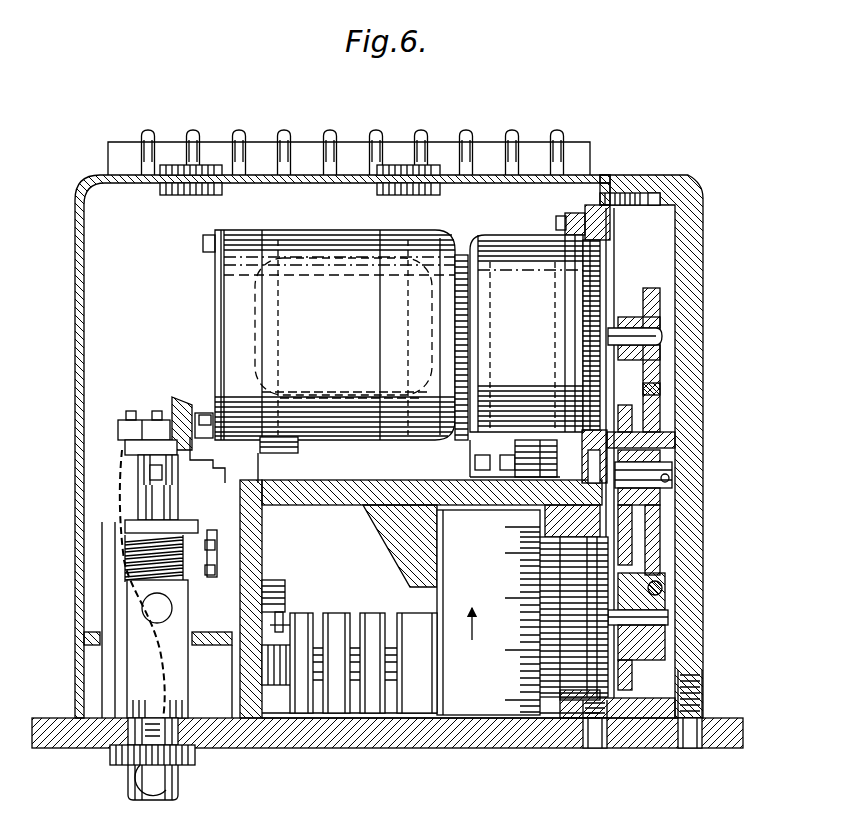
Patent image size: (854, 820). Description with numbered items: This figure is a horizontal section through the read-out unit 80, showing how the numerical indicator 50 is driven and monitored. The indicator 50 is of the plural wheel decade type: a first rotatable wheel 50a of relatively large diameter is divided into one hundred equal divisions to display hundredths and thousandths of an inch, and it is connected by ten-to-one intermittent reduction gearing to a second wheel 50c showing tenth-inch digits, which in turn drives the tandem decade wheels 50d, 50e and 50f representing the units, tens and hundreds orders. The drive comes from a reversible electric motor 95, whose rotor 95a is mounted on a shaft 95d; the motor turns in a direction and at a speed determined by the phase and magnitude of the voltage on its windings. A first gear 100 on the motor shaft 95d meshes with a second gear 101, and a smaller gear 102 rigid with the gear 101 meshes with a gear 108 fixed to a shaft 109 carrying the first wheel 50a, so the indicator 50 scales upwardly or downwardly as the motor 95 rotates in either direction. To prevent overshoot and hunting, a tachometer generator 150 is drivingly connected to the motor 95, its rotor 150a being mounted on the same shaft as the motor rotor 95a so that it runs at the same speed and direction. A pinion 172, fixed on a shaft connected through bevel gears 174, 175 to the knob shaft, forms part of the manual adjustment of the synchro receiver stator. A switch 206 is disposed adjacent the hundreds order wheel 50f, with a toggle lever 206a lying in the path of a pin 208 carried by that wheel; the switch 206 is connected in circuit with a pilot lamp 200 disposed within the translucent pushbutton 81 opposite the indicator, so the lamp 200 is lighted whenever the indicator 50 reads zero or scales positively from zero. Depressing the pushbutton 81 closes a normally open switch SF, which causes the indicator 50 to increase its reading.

The read-out unit 80 is at (705, 608).
The reversible electric motor 95 is at (300, 228).
The rotor 95a is at (322, 272).
The motor shaft 95d is at (664, 342).
The tachometer generator 150 is at (493, 230).
The tachometer rotor 150a is at (528, 262).
The first gear 100 is at (648, 290).
The second gear 101 is at (657, 400).
The smaller gear 102 is at (623, 405).
The gear 108 is at (626, 555).
The shaft 109 is at (655, 620).
The pinion 172 is at (545, 470).
The bevel gear 174 is at (185, 400).
The bevel gear 175 is at (185, 470).
The normally open switch SF is at (147, 420).
The switch 206 is at (281, 580).
The toggle lever 206a is at (282, 628).
The pin 208 is at (258, 622).
The numerical indicator 50 is at (321, 678).
The first rotatable wheel 50a is at (505, 715).
The second wheel 50c is at (420, 715).
The decade wheel 50d is at (374, 715).
The decade wheel 50e is at (338, 715).
The decade wheel 50f is at (303, 715).
The pilot lamp 200 is at (128, 778).
The pushbutton 81 is at (176, 790).